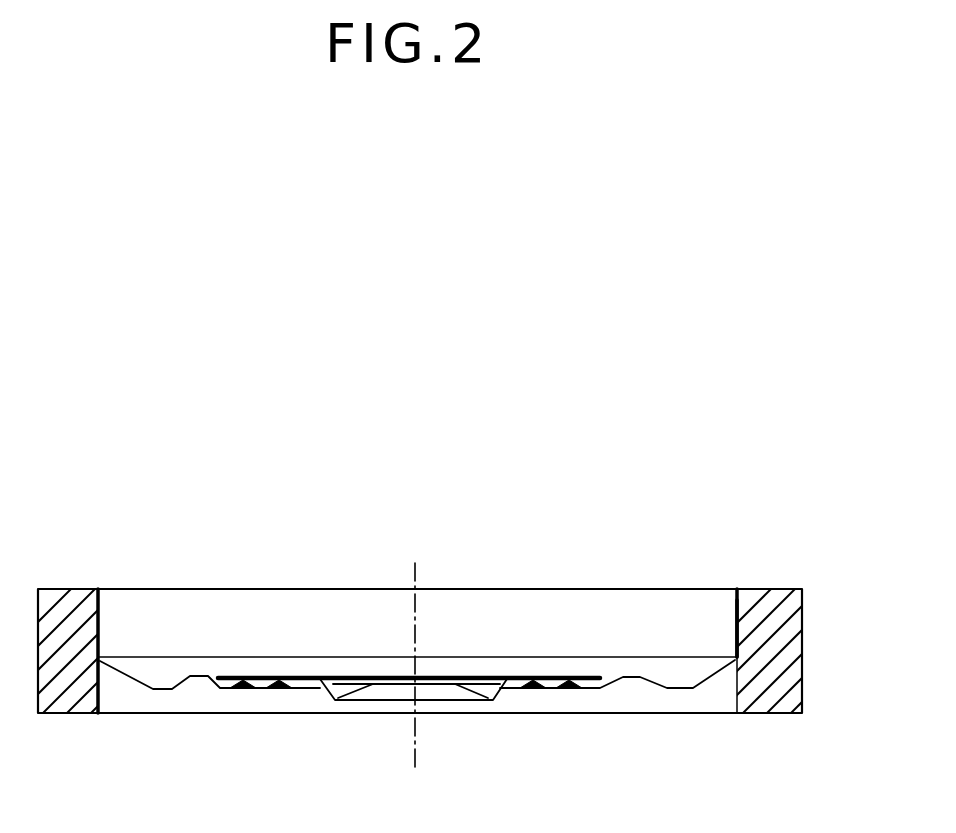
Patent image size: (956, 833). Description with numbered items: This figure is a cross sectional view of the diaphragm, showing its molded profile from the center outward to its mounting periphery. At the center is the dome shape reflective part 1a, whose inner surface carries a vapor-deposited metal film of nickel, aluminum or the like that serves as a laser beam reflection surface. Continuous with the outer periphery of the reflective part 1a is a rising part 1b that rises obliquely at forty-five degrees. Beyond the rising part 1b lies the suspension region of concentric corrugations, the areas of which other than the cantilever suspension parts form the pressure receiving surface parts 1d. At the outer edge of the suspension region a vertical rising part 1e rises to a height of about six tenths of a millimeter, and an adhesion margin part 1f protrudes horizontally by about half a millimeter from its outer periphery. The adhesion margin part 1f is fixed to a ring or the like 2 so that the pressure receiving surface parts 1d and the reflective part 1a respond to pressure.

The frame 2 is at (802, 617).
The dome shape reflective part 1a is at (442, 678).
The rising part 1b is at (493, 680).
The pressure receiving surface parts 1d is at (613, 680).
The vertical rising part 1e is at (733, 632).
The adhesion margin part 1f is at (770, 588).